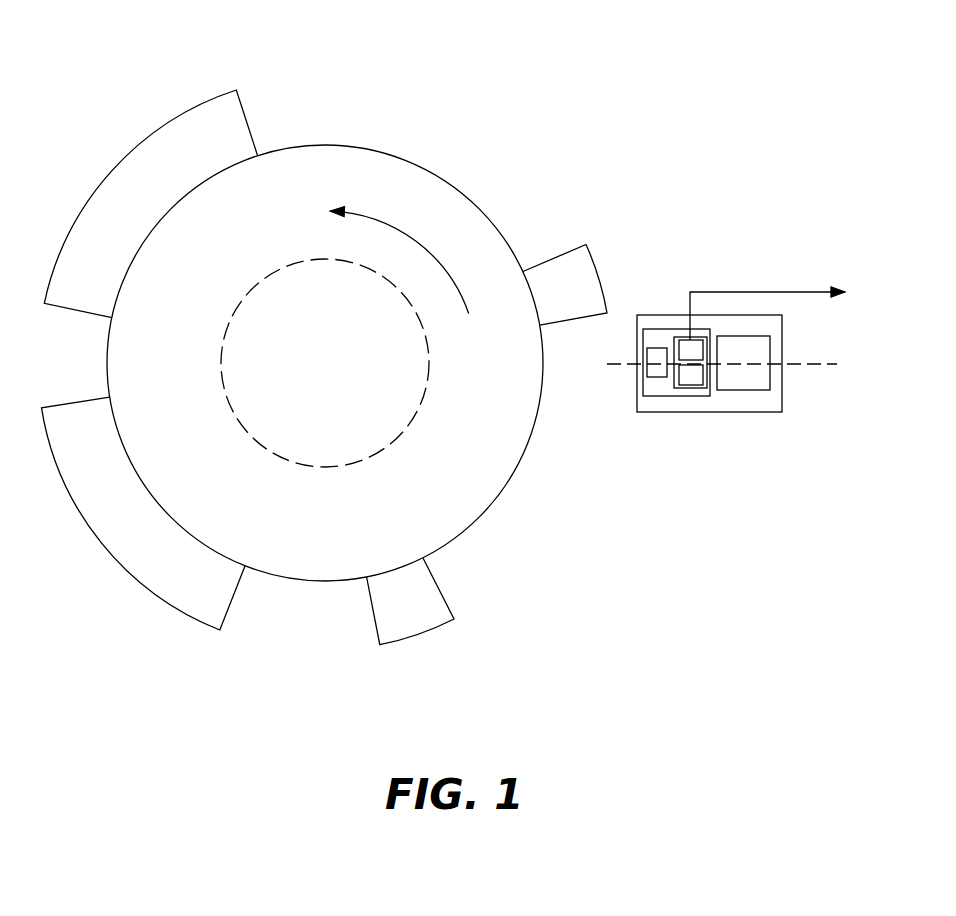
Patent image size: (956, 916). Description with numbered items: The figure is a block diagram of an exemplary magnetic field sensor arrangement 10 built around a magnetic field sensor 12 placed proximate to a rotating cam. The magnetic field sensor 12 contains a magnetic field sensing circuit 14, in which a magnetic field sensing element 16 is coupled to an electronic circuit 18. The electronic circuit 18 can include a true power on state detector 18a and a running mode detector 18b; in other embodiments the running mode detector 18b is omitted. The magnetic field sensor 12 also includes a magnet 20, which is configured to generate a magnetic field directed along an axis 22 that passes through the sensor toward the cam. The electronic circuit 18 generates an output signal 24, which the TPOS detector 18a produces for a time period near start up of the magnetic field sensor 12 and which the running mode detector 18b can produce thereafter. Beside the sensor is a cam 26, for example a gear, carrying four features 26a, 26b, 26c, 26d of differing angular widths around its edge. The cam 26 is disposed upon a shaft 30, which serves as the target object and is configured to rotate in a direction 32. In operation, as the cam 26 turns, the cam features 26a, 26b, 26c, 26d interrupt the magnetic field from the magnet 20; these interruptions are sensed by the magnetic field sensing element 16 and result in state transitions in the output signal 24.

The magnetic field sensor arrangement 10 is at (725, 100).
The magnetic field sensor 12 is at (783, 350).
The magnetic field sensing circuit 14 is at (669, 330).
The magnetic field sensing element 16 is at (662, 350).
The electronic circuit 18 is at (678, 388).
The TPOS detector 18a is at (692, 340).
The running mode detector 18b is at (697, 387).
The magnet 20 is at (752, 392).
The axis 22 is at (790, 365).
The output signal 24 is at (767, 292).
The cam 26 is at (375, 148).
The cam feature 26a is at (418, 633).
The cam feature 26b is at (230, 603).
The cam feature 26c is at (248, 120).
The cam feature 26d is at (598, 277).
The shaft 30 is at (427, 360).
The direction 32 is at (438, 258).